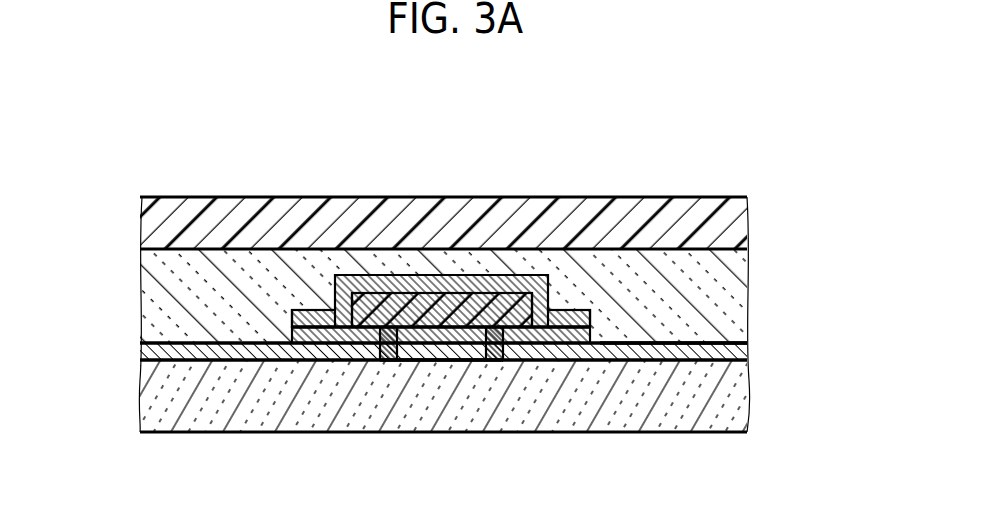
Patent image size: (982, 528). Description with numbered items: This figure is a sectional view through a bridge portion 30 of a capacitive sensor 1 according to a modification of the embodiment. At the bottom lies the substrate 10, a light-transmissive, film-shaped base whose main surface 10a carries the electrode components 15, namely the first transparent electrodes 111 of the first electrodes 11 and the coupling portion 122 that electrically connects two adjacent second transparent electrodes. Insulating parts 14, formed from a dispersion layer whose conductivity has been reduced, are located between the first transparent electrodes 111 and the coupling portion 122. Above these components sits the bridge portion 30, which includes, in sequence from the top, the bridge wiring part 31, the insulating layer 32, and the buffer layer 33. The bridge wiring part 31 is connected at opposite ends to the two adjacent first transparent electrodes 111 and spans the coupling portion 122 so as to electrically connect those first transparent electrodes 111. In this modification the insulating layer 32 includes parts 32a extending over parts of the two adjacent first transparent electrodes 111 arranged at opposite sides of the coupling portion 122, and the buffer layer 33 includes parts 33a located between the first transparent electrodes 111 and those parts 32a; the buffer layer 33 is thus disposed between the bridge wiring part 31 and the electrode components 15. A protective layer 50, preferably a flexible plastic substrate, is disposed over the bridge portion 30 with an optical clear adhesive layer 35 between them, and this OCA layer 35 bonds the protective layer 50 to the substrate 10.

The capacitive sensor 1 is at (724, 161).
The substrate 10 is at (737, 400).
The main surface 10a is at (625, 362).
The first electrode 11 is at (472, 353).
The first transparent electrode 111 is at (140, 350).
The coupling portion 122 is at (445, 345).
The insulating part 14 is at (390, 355).
The electrode components 15 is at (677, 341).
The bridge portion 30 is at (441, 205).
The bridge wiring part 31 is at (443, 325).
The insulating layer 32 is at (456, 308).
The part of insulating layer 32a is at (368, 305).
The buffer layer 33 is at (469, 284).
The part of buffer layer 33a is at (367, 343).
The optical clear adhesive layer 35 is at (737, 298).
The protective layer 50 is at (737, 220).